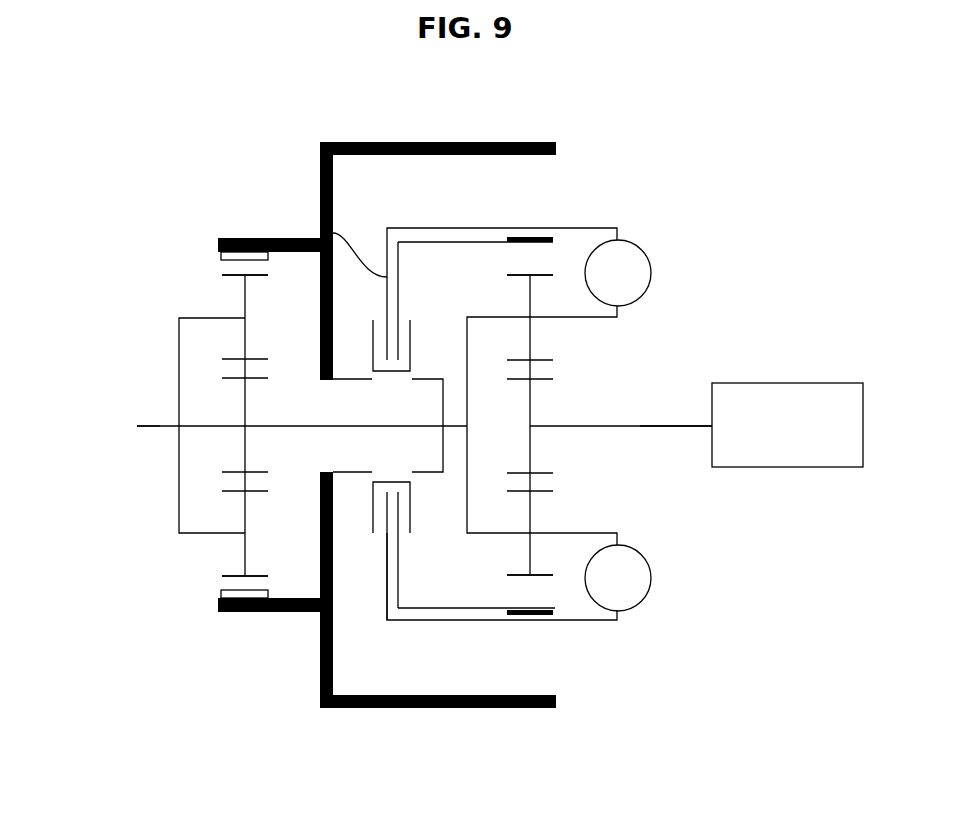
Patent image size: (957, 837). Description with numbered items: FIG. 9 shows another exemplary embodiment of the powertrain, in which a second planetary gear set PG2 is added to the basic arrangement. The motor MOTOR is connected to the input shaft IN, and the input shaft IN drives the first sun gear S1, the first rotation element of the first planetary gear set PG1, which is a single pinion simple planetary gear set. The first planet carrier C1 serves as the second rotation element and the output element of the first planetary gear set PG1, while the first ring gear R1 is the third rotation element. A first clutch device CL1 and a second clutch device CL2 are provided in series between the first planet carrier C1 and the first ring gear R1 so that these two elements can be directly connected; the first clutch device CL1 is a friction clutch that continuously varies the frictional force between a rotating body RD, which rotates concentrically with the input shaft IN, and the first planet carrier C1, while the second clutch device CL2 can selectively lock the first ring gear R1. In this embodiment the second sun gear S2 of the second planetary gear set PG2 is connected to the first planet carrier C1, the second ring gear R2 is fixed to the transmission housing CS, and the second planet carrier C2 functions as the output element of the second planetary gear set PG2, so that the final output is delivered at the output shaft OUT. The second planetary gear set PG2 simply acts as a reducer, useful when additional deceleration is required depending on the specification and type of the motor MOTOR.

The transmission housing CS is at (320, 682).
The rotating body RD is at (320, 212).
The first ring gear R1 is at (545, 240).
The second ring gear R2 is at (223, 261).
The first sun gear S1 is at (547, 379).
The second sun gear S2 is at (235, 378).
The first planet carrier C1 is at (577, 318).
The second planet carrier C2 is at (175, 520).
The first clutch device CL1 is at (618, 425).
The second clutch device CL2 is at (358, 341).
The first planetary gear set PG1 is at (553, 638).
The second planetary gear set PG2 is at (203, 626).
The output shaft OUT is at (148, 426).
The input shaft IN is at (650, 426).
The motor MOTOR is at (787, 425).